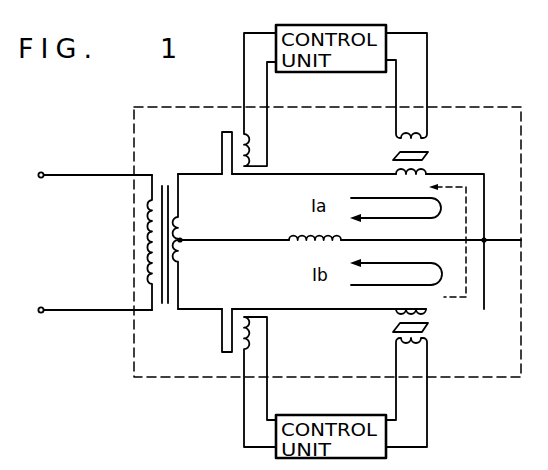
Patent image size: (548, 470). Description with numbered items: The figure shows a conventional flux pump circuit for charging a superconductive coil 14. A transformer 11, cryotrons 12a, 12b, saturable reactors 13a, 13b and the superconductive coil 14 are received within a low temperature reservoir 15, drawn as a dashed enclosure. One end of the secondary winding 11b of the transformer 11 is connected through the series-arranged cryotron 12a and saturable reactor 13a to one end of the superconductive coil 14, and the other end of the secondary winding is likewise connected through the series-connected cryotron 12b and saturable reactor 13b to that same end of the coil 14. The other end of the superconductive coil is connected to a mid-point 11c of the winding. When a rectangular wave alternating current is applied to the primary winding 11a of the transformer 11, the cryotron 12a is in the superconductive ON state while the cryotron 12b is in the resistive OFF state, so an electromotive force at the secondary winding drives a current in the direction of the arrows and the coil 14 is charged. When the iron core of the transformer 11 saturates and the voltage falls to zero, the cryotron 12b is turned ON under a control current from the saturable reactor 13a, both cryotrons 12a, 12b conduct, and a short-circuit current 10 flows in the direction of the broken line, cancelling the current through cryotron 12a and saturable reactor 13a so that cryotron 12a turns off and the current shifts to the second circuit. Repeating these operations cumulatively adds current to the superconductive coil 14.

The load current path 10 is at (447, 240).
The transformer 11 is at (162, 185).
The primary winding 11a is at (148, 251).
The secondary winding 11b is at (185, 255).
The mid-point 11c is at (187, 220).
The cryotron 12a is at (221, 143).
The cryotron 12b is at (223, 352).
The saturable reactor 13a is at (430, 152).
The saturable reactor 13b is at (432, 330).
The superconductive coil 14 is at (289, 245).
The low temperature reservoir 15 is at (474, 107).